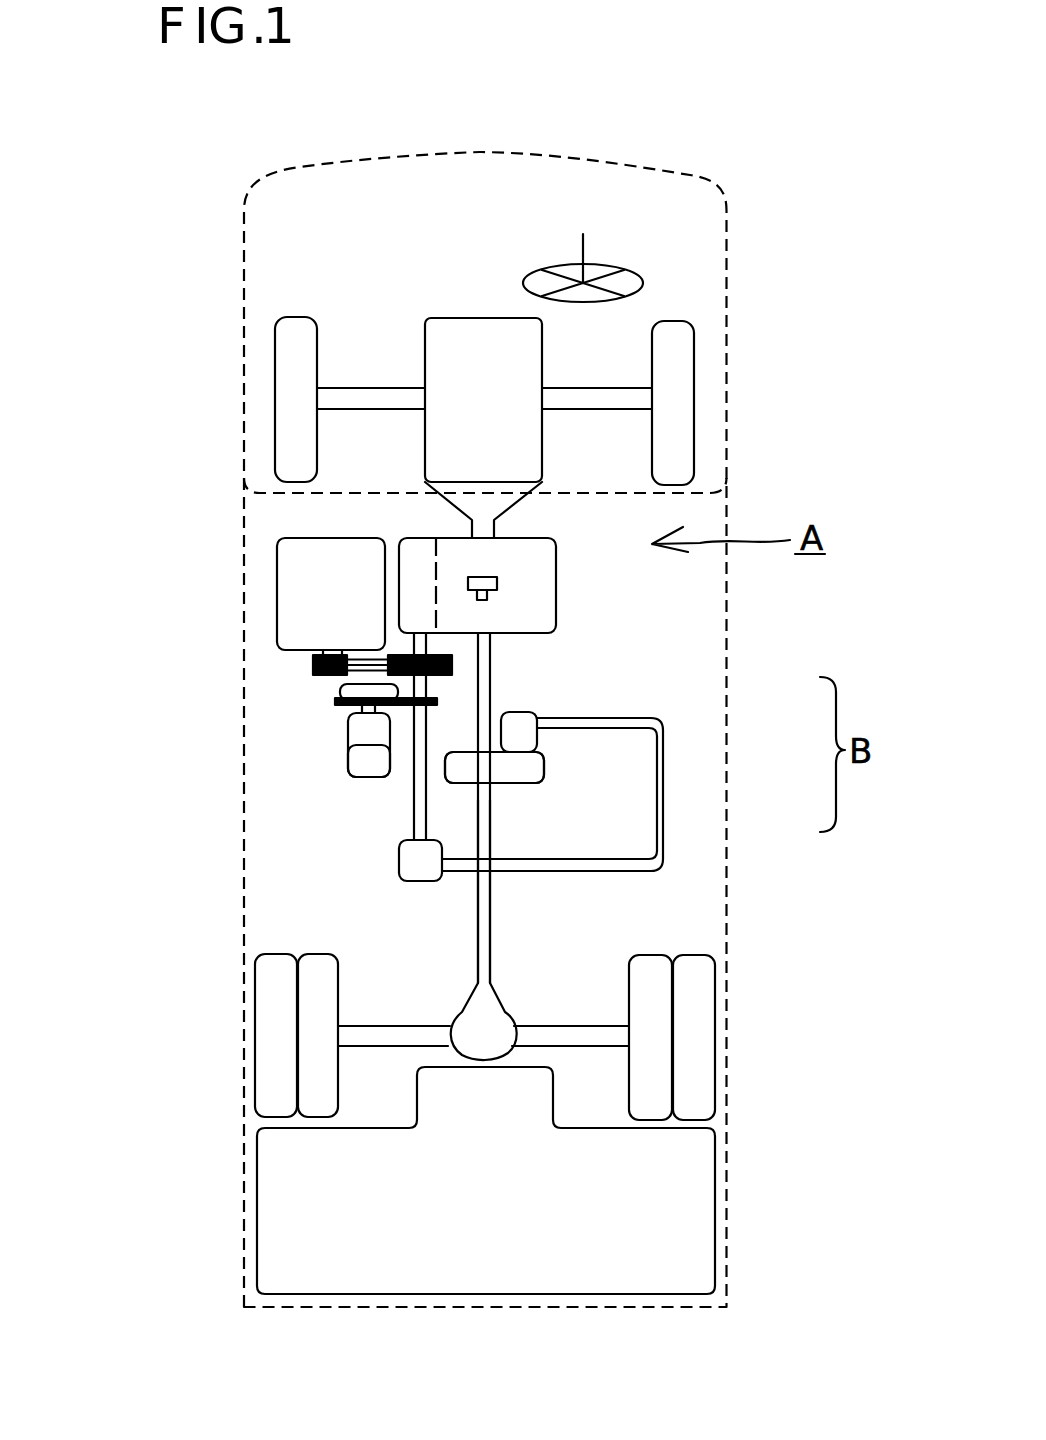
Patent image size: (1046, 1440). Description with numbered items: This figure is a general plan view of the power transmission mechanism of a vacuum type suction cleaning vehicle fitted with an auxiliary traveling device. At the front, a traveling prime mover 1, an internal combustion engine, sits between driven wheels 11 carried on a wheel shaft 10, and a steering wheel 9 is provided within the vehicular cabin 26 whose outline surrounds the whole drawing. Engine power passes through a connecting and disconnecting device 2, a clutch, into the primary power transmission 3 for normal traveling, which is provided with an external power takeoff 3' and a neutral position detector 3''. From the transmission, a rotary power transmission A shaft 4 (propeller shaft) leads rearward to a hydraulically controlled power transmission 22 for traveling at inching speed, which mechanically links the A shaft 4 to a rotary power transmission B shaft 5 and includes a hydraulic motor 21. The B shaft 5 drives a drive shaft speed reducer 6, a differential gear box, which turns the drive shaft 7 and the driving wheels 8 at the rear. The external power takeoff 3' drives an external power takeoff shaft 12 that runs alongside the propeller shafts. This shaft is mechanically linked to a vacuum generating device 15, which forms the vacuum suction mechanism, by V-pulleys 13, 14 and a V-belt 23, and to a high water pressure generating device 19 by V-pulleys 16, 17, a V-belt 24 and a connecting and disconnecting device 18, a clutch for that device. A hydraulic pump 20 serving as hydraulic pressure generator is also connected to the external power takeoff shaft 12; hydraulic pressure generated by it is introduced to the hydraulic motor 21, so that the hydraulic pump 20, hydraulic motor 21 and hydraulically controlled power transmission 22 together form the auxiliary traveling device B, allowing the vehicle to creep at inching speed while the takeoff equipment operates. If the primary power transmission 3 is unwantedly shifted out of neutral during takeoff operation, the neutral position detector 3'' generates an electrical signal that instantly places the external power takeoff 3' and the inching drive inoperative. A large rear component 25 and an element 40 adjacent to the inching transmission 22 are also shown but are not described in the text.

The traveling prime mover 1 is at (470, 368).
The connecting and disconnecting device 2 is at (468, 497).
The primary power transmission 3 is at (612, 585).
The external power takeoff 3' is at (289, 585).
The neutral position detector 3'' is at (655, 507).
The rotary power transmission A shaft 4 is at (490, 693).
The rotary power transmission B shaft 5 is at (485, 892).
The drive shaft speed reducer 6 is at (483, 1018).
The drive shaft 7 is at (580, 1037).
The driving wheels 8 is at (652, 998).
The steering wheel 9 is at (643, 277).
The wheel shaft 10 is at (373, 397).
The driven wheels 11 is at (298, 358).
The external power takeoff shaft 12 is at (413, 801).
The V-pulley 13 is at (440, 653).
The V-pulley 14 is at (315, 665).
The vacuum generating device 15 is at (312, 563).
The V-pulley 16 is at (348, 752).
The V-pulley 17 is at (362, 709).
The connecting and disconnecting device 18 is at (340, 686).
The high water pressure generating device 19 is at (368, 767).
The hydraulic pump 20 is at (427, 853).
The hydraulic motor 21 is at (530, 734).
The hydraulically controlled power transmission 22 is at (588, 762).
The V-belt 23 is at (373, 655).
The V-belt 24 is at (437, 705).
The battery 25 is at (645, 1167).
The vehicular cabin 26 is at (700, 290).
The detector 40 is at (540, 773).